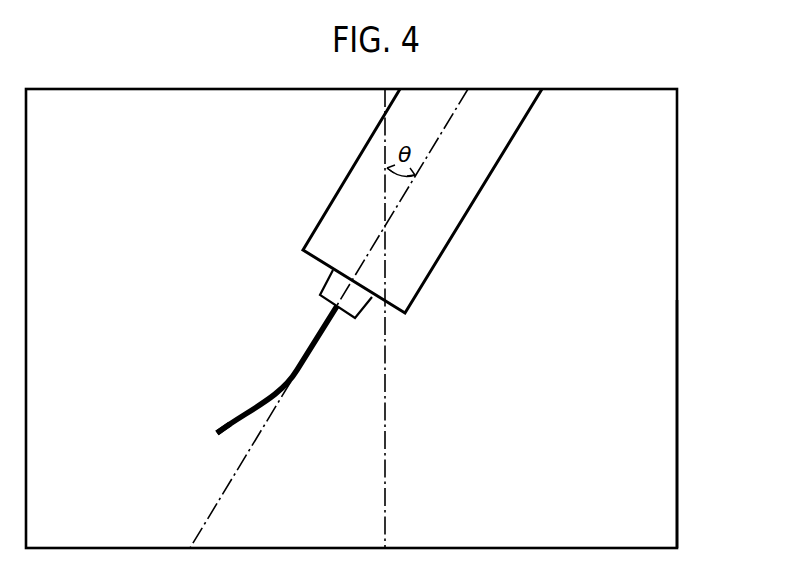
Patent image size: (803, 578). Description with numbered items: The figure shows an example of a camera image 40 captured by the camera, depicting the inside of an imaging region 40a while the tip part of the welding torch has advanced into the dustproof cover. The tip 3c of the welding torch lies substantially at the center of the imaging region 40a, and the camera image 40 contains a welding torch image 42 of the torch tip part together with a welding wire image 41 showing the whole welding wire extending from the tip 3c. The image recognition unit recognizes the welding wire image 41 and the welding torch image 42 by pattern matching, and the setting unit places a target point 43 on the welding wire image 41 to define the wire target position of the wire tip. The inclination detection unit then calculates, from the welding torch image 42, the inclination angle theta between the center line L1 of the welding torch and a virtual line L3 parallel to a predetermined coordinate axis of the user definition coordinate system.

The camera image 40 is at (653, 267).
The imaging region 40a is at (678, 413).
The welding torch image 42 is at (493, 170).
The tip of the welding torch 3c is at (323, 299).
The welding wire image 41 is at (250, 407).
The target point 43 is at (220, 428).
The center line of the welding torch L1 is at (450, 128).
The virtual line L3 is at (385, 458).